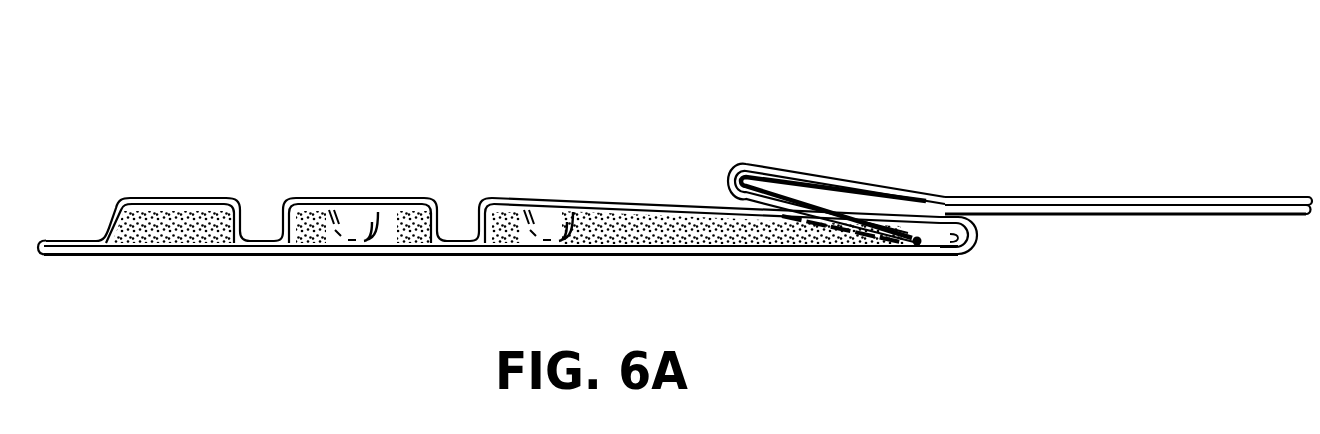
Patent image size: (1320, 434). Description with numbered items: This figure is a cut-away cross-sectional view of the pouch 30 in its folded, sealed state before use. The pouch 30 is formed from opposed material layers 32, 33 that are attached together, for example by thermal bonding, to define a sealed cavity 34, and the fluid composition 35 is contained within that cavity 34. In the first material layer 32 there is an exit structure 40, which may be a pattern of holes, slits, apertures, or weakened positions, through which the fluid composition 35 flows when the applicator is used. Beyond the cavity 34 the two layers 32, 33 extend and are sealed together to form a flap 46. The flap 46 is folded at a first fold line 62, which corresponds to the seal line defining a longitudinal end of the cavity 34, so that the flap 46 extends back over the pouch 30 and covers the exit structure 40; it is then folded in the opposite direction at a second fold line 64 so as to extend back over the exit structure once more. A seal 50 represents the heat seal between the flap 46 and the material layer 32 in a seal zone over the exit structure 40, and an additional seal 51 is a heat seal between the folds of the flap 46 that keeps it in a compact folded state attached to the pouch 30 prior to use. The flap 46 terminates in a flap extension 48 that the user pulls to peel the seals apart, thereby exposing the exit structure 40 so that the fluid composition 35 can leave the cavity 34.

The pouch 30 is at (454, 123).
The first material layer 32 is at (190, 197).
The second material layer 33 is at (205, 256).
The cavity 34 is at (400, 243).
The fluid composition 35 is at (692, 245).
The exit structure 40 is at (867, 228).
The flap 46 is at (900, 193).
The flap extension 48 is at (1050, 197).
The seal 50 is at (747, 202).
The additional seal 51 is at (913, 246).
The first fold line 62 is at (977, 238).
The second fold line 64 is at (737, 165).